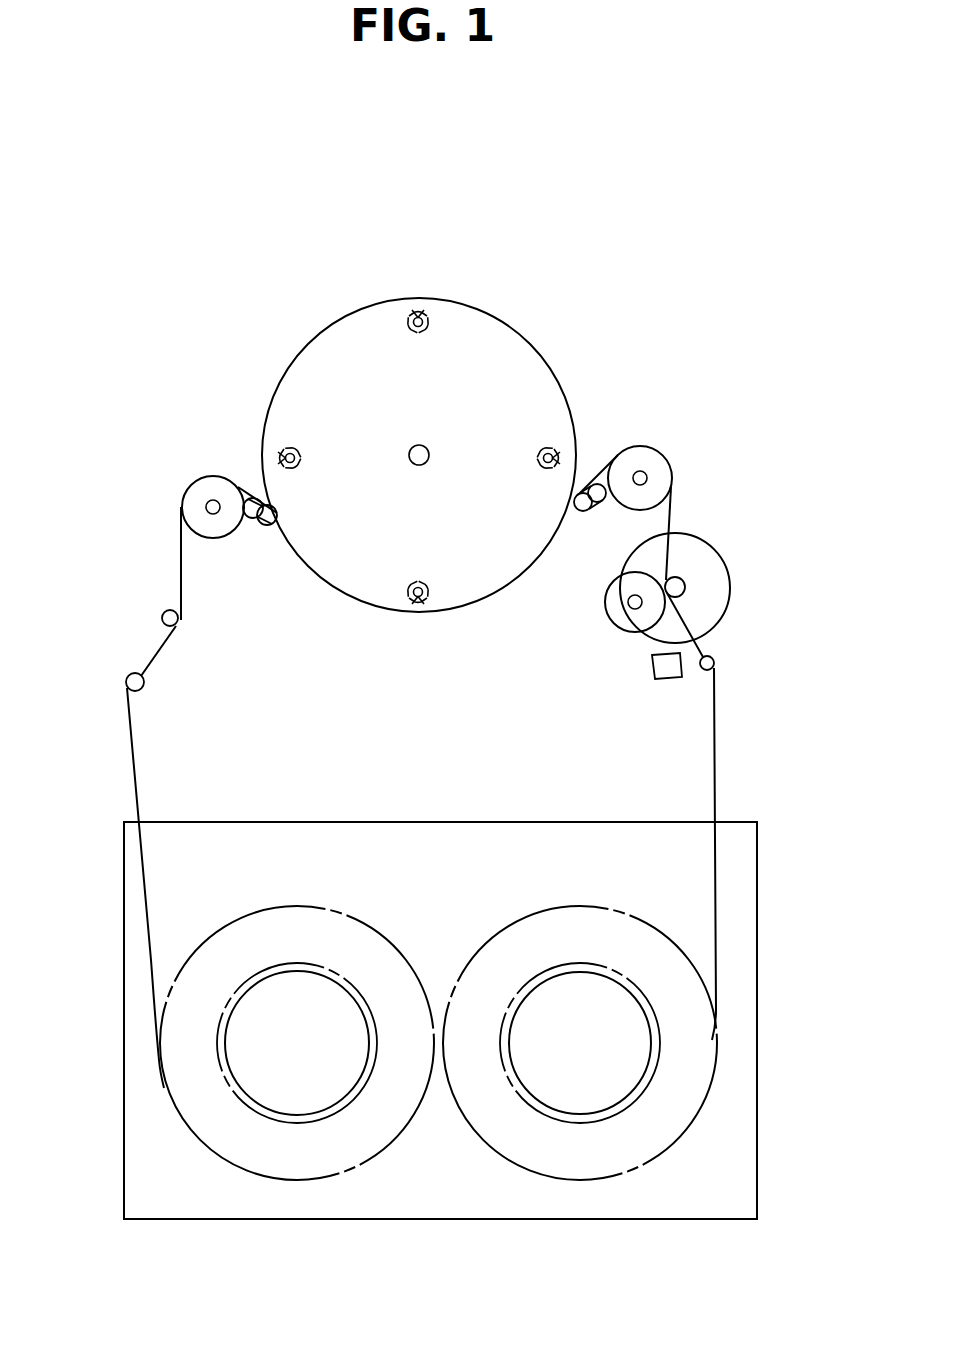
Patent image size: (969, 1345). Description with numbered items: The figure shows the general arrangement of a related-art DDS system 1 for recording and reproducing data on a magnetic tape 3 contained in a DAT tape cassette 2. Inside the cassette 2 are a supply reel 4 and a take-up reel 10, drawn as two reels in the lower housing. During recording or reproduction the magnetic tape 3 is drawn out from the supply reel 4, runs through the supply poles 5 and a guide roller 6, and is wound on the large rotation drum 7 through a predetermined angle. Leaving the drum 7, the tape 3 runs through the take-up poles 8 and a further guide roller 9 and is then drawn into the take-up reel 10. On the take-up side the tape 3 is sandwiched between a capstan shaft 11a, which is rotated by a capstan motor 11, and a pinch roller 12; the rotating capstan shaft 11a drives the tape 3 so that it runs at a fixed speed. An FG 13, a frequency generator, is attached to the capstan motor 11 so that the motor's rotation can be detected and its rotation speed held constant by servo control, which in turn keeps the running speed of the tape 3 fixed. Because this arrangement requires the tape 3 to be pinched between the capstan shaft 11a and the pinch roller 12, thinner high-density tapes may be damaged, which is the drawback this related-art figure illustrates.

The DDS system 1 is at (178, 323).
The DAT tape cassette 2 is at (122, 1148).
The magnetic tape 3 is at (134, 780).
The supply reel 4 is at (243, 1044).
The supply poles 5 is at (268, 527).
The guide roller 6 is at (208, 525).
The rotation drum 7 is at (327, 356).
The take-up poles 8 is at (585, 512).
The guide roller 9 is at (654, 460).
The take-up reel 10 is at (620, 1064).
The capstan motor 11 is at (702, 570).
The capstan shaft 11a is at (682, 588).
The pinch roller 12 is at (626, 620).
The FG (Frequency Generator) 13 is at (660, 676).